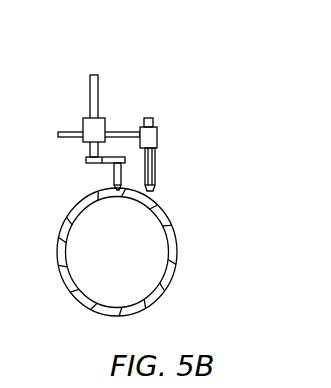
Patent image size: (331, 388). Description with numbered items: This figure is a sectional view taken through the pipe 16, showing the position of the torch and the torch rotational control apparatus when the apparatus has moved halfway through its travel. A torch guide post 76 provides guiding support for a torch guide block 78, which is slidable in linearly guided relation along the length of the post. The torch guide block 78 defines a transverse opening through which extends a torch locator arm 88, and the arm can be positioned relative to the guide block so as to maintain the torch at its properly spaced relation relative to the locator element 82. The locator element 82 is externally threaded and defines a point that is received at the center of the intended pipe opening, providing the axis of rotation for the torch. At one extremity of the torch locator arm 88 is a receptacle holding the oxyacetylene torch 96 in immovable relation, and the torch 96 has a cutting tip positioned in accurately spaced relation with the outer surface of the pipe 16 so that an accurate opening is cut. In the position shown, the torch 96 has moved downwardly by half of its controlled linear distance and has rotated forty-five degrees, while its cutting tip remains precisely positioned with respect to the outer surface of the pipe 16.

The pipe 16 is at (175, 248).
The torch guide post 76 is at (100, 88).
The torch guide block 78 is at (100, 128).
The locator element 82 is at (112, 180).
The torch locator arm 88 is at (72, 132).
The oxyacetylene torch 96 is at (157, 165).